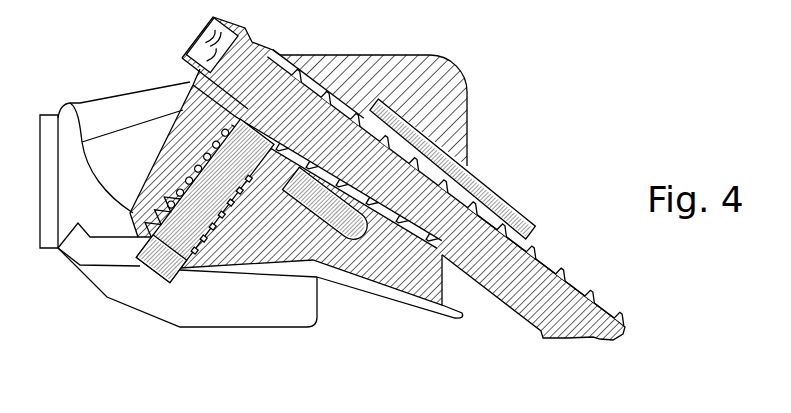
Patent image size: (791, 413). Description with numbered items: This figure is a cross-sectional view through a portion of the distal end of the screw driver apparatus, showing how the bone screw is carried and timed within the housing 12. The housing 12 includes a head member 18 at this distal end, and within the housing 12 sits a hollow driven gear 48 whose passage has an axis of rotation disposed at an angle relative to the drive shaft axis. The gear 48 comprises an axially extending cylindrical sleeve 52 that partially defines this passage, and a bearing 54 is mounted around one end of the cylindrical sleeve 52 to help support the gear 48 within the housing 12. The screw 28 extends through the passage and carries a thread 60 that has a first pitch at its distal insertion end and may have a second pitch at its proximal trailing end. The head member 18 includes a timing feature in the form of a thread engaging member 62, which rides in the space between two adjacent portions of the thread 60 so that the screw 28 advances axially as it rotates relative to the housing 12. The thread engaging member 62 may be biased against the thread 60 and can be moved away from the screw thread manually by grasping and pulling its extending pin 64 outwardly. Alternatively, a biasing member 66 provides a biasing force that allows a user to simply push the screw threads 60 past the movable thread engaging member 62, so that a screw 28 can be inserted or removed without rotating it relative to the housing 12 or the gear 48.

The housing 12 is at (78, 277).
The head member 18 is at (88, 112).
The screw 28 is at (584, 330).
The hollow driven gear 48 is at (428, 128).
The cylindrical sleeve 52 is at (440, 278).
The bearing 54 is at (394, 95).
The thread 60 is at (268, 53).
The thread engaging member 62 is at (188, 122).
The extending pin 64 is at (164, 272).
The biasing member 66 is at (237, 228).